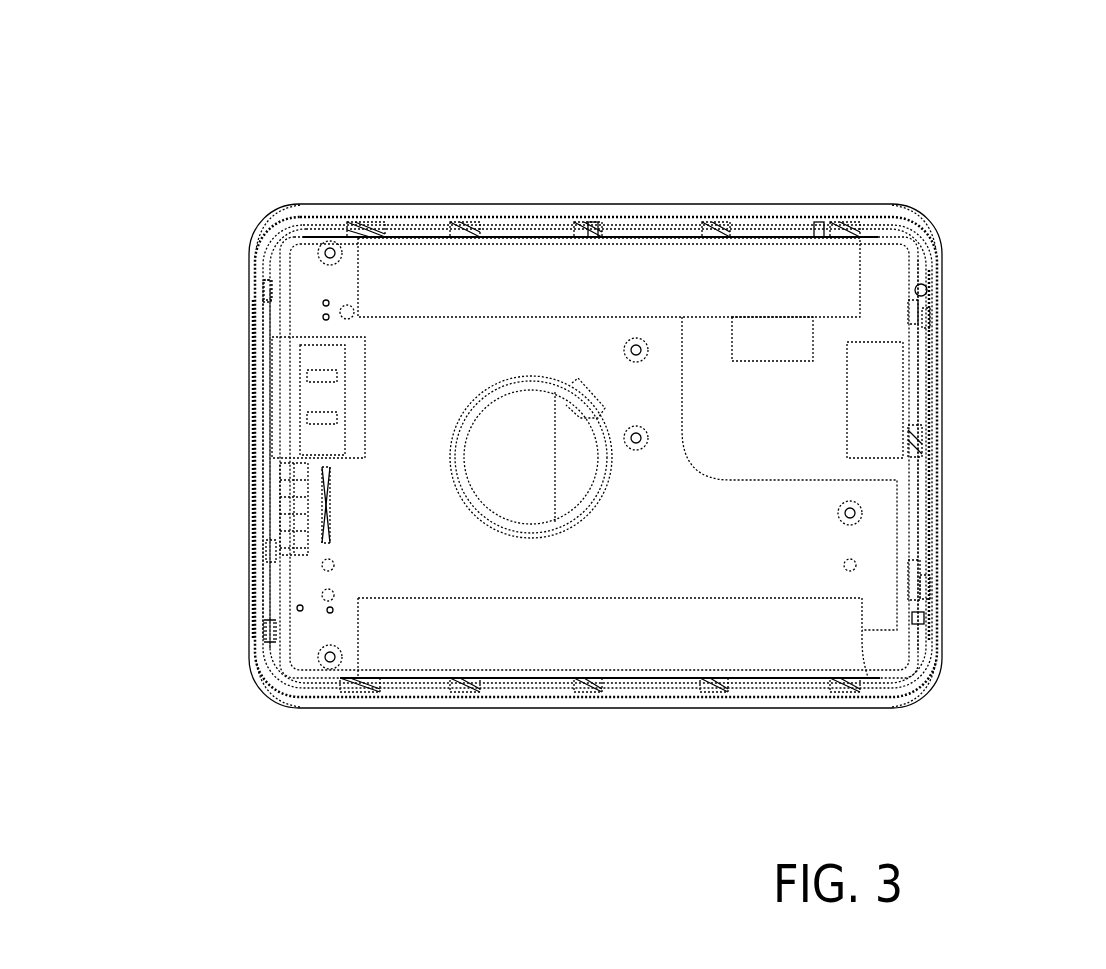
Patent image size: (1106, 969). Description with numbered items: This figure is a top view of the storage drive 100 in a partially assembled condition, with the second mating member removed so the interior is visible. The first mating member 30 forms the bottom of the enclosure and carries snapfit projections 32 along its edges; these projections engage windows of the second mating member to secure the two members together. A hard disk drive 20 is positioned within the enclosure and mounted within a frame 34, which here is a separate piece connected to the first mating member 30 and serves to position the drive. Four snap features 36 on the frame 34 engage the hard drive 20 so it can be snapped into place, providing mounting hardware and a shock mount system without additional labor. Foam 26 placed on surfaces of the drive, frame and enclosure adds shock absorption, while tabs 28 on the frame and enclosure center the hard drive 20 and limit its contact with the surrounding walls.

The storage drive 100 is at (968, 148).
The hard disk drive 20 is at (898, 257).
The foam 26 is at (655, 258).
The tabs 28 is at (595, 222).
The first mating member 30 is at (942, 392).
The snapfit projections 32 is at (452, 212).
The frame 34 is at (931, 430).
The snap features 36 is at (338, 200).